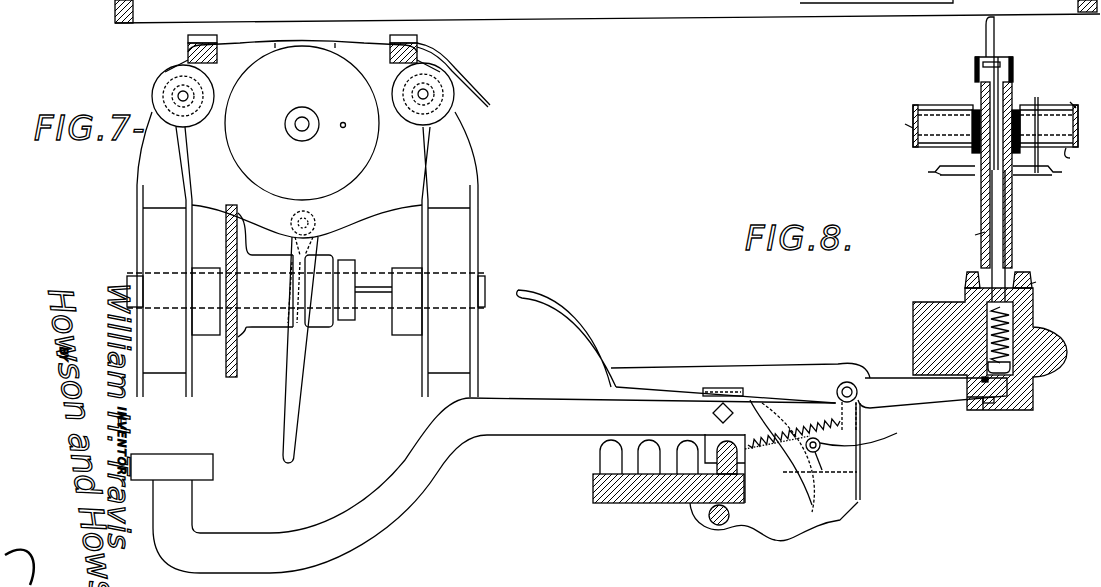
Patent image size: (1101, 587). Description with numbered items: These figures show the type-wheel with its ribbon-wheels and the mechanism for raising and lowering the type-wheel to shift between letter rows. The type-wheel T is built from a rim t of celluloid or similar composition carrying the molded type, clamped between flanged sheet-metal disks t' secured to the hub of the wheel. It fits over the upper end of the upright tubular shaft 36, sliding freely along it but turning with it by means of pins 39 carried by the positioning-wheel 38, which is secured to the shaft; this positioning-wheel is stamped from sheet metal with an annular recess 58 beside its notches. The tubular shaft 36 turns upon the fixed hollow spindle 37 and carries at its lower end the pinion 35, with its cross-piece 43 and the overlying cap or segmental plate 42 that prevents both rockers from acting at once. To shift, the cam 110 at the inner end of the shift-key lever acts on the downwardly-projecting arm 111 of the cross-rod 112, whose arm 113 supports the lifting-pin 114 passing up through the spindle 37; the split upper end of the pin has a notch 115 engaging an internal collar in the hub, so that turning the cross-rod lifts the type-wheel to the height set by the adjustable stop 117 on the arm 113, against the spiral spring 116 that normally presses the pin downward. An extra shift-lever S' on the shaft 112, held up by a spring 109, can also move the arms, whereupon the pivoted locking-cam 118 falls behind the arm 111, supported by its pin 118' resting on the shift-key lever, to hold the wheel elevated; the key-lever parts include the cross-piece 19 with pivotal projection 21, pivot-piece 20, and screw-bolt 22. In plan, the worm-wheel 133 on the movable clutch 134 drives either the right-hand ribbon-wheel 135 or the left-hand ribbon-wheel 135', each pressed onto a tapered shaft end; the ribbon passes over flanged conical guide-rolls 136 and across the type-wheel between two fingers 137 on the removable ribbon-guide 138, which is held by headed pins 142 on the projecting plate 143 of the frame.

In FIG. 7, the projecting plate 143 is at (307, 175).
In FIG. 7, the left-hand ribbon-wheel 135' is at (164, 291).
In FIG. 7, the right-hand ribbon-wheel 135 is at (450, 291).
In FIG. 7, the type-wheel T is at (302, 123).
In FIG. 7, the pin 39 is at (346, 135).
In FIG. 8, the pin 39 is at (1040, 126).
In FIG. 7, the flanged conical guide-rolls 136 is at (305, 95).
In FIG. 7, the headed pins 142 is at (304, 43).
In FIG. 7, the fingers 137 is at (302, 47).
In FIG. 7, the removable ribbon-guide 138 is at (453, 72).
In FIG. 7, the worm-wheel 133 is at (240, 303).
In FIG. 7, the movable clutch 134 is at (315, 337).
In FIG. 8, the extra shift-lever S' is at (500, 415).
In FIG. 8, the pivot-piece 20 is at (723, 383).
In FIG. 8, the screw-bolt 22 is at (734, 413).
In FIG. 8, the cross-rod 112 is at (837, 392).
In FIG. 8, the arm 113 is at (932, 392).
In FIG. 8, the spring 109 is at (792, 429).
In FIG. 8, the cross-piece 19 is at (669, 477).
In FIG. 8, the pivotal projection 21 is at (668, 457).
In FIG. 8, the locking-cam 118 is at (774, 470).
In FIG. 8, the cam 110 is at (825, 470).
In FIG. 8, the downwardly-projecting arm 111 is at (860, 480).
In FIG. 8, the pin 118' is at (858, 435).
In FIG. 8, the notch 115 is at (1000, 58).
In FIG. 8, the spindle 37 is at (1012, 224).
In FIG. 8, the tubular shaft 36 is at (1012, 243).
In FIG. 8, the lifting-pin 114 is at (967, 237).
In FIG. 8, the reel spool T' is at (995, 115).
In FIG. 8, the rim t is at (903, 128).
In FIG. 8, the sheet-metal disk t' is at (1071, 123).
In FIG. 8, the annular recess 58 is at (944, 176).
In FIG. 8, the positioning-wheel 38 is at (1037, 177).
In FIG. 8, the cap or segmental plate 42 is at (968, 270).
In FIG. 8, the cross-piece 43 is at (1018, 270).
In FIG. 8, the pinion 35 is at (1042, 281).
In FIG. 8, the spiral spring 116 is at (1005, 328).
In FIG. 8, the adjustable stop 117 is at (992, 403).